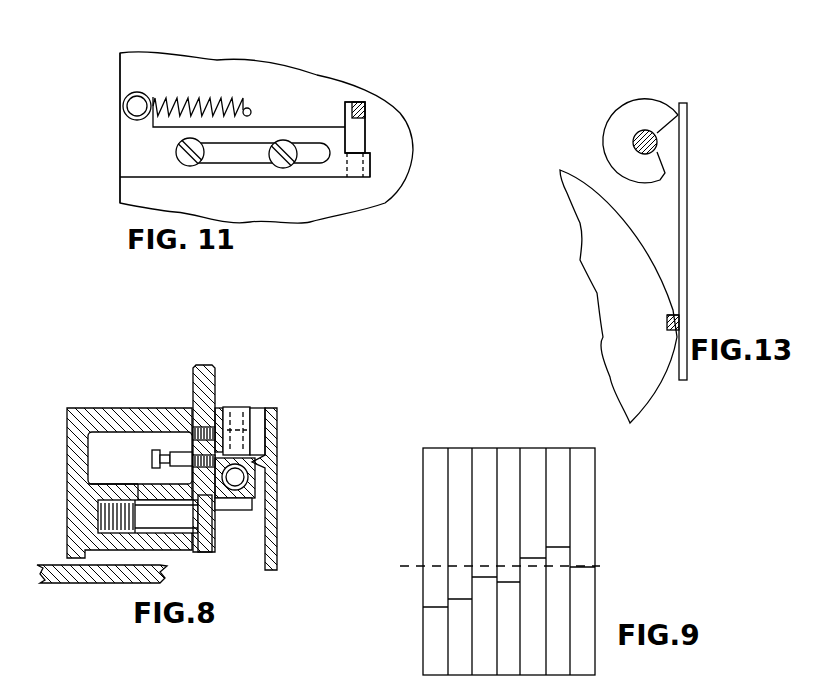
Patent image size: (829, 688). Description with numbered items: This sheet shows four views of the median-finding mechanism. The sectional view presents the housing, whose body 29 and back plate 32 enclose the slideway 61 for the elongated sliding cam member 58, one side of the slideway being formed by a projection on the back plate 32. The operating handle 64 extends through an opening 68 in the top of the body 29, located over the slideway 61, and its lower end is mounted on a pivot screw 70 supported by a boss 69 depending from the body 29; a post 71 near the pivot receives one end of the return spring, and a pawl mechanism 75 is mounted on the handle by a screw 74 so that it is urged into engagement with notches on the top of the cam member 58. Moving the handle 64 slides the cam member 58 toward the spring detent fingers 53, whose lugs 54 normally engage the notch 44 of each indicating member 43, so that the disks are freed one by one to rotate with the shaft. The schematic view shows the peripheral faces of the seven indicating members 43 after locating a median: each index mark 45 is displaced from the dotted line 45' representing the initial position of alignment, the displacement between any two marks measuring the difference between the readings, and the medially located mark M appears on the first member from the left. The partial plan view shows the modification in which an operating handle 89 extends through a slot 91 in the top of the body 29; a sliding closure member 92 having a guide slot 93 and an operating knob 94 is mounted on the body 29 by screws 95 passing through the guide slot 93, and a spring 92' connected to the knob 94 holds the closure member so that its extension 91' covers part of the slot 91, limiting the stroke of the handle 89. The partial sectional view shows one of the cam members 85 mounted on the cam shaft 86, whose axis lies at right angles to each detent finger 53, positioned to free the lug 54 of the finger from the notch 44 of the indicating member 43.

In FIG. 11, the body 29 is at (290, 87).
In FIG. 8, the body 29 is at (105, 413).
In FIG. 8, the back plate 32 is at (273, 543).
In FIG. 13, the indicating member 43 is at (580, 217).
In FIG. 9, the indicating member 43 is at (557, 453).
In FIG. 13, the notch 44 is at (667, 332).
In FIG. 9, the index mark 45 is at (508, 574).
In FIG. 9, the dotted line 45' is at (530, 548).
In FIG. 13, the spring detent finger 53 is at (686, 181).
In FIG. 13, the lug 54 is at (678, 323).
In FIG. 8, the sliding cam member 58 is at (250, 478).
In FIG. 8, the slideway 61 is at (238, 502).
In FIG. 8, the operating handle 64 is at (209, 362).
In FIG. 8, the opening 68 is at (260, 417).
In FIG. 8, the boss 69 is at (95, 488).
In FIG. 8, the pivot screw 70 is at (182, 527).
In FIG. 8, the post 71 is at (152, 468).
In FIG. 8, the screw 74 is at (190, 437).
In FIG. 8, the pawl mechanism 75 is at (238, 410).
In FIG. 13, the cam member 85 is at (648, 111).
In FIG. 13, the cam shaft 86 is at (633, 141).
In FIG. 11, the operating handle 89 is at (362, 108).
In FIG. 11, the slot 91 is at (369, 127).
In FIG. 11, the extension 91' is at (350, 181).
In FIG. 11, the sliding closure member 92 is at (215, 151).
In FIG. 11, the spring 92' is at (202, 93).
In FIG. 11, the guide slot 93 is at (233, 155).
In FIG. 11, the operating knob 94 is at (130, 110).
In FIG. 11, the screw 95 is at (280, 164).